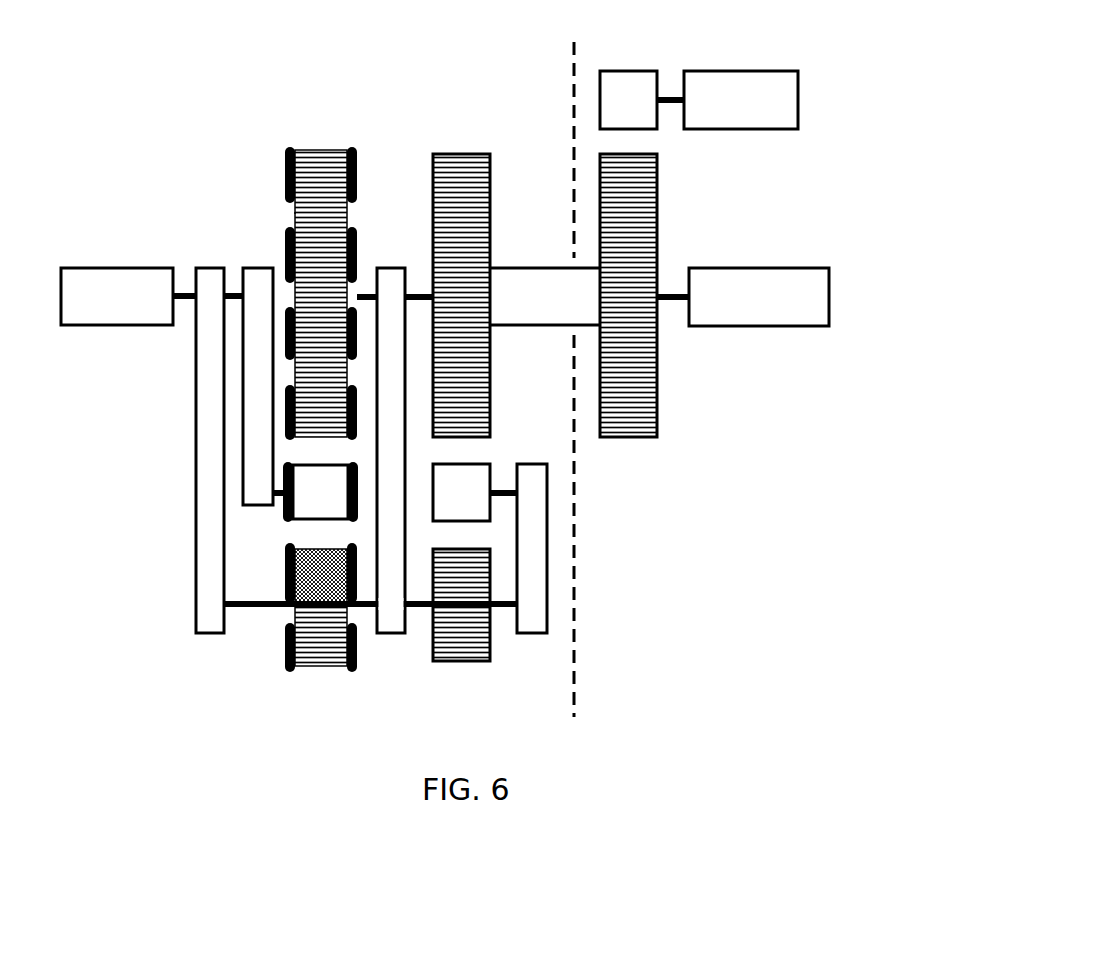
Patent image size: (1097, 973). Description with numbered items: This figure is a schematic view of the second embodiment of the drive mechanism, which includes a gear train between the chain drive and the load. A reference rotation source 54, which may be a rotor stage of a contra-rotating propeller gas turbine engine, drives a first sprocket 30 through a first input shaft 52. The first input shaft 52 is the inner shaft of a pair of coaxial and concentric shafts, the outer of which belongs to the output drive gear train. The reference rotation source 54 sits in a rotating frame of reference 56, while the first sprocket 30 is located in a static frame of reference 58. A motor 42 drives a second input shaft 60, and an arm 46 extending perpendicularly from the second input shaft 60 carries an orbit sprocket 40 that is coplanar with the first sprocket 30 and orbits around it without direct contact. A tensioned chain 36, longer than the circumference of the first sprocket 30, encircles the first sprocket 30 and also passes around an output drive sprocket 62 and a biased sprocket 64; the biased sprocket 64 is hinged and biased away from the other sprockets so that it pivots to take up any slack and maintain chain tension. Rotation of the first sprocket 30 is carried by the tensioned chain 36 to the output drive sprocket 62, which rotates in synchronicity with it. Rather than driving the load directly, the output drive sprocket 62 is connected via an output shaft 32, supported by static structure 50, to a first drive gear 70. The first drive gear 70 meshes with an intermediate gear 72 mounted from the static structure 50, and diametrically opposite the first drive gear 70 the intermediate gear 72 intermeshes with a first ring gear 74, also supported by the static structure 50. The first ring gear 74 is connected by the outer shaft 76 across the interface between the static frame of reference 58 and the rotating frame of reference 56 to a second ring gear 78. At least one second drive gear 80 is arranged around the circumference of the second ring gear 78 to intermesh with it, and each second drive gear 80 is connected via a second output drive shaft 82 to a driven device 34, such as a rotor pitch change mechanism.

The first sprocket 30 is at (294, 213).
The output shaft 32 is at (420, 610).
The driven device 34 is at (769, 99).
The tensioned chain 36 is at (355, 177).
The orbit sprocket 40 is at (317, 493).
The motor 42 is at (103, 268).
The arm 46 is at (256, 409).
The static structure 50 is at (197, 386).
The first input shaft 52 is at (668, 290).
The reference rotation source 54 is at (755, 266).
The rotating frame of reference 56 is at (736, 447).
The static frame of reference 58 is at (551, 386).
The second input shaft 60 is at (185, 293).
The output drive sprocket 62 is at (330, 637).
The biased sprocket 64 is at (322, 573).
The first drive gear 70 is at (457, 640).
The intermediate gear 72 is at (472, 492).
The first ring gear 74 is at (458, 175).
The outer shaft 76 is at (522, 295).
The second ring gear 78 is at (637, 402).
The second drive gear 80 is at (622, 80).
The second output drive shaft 82 is at (669, 90).